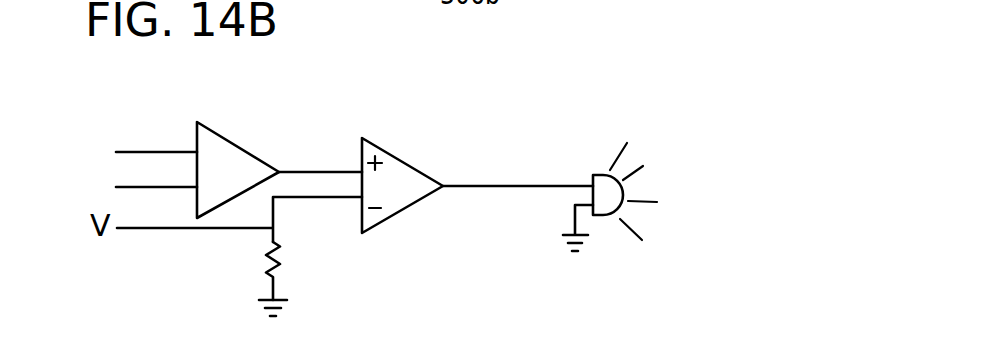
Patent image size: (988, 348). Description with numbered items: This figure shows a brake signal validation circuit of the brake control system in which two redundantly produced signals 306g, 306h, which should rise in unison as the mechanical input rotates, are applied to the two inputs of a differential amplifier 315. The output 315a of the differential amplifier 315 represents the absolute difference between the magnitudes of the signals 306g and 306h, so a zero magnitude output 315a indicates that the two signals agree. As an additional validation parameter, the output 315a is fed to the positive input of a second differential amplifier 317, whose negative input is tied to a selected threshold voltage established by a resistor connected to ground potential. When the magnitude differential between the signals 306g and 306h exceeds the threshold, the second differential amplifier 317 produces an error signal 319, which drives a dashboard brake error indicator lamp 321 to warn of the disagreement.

The signal 306h is at (150, 152).
The signal 306g is at (143, 187).
The differential amplifier 315 is at (205, 124).
The output 315a is at (292, 172).
The second differential amplifier 317 is at (378, 145).
The error signal 319 is at (475, 186).
The dashboard brake error indicator lamp 321 is at (610, 215).